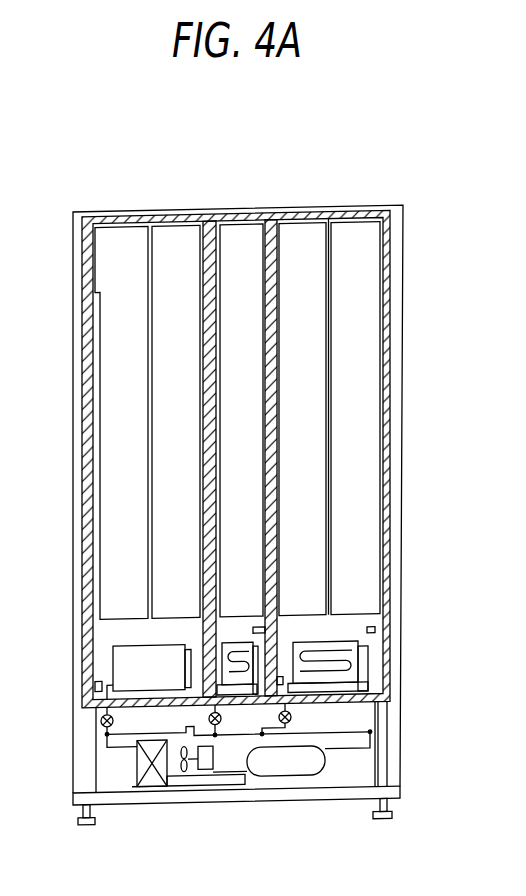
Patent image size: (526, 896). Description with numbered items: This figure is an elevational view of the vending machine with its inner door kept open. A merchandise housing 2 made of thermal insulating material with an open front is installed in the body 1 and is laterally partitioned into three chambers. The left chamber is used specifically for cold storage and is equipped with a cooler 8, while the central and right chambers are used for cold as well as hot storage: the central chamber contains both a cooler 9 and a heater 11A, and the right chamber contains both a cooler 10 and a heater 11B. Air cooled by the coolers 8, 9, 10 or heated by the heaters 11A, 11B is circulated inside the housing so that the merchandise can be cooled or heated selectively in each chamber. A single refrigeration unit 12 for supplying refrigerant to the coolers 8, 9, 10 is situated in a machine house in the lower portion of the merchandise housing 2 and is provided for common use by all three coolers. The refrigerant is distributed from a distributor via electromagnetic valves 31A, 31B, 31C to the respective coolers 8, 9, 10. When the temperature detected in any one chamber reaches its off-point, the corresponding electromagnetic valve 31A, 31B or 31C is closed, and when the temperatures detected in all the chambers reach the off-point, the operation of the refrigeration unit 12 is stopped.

The body 1 is at (343, 209).
The merchandise housing 2 is at (267, 214).
The cooler 8 is at (127, 660).
The cooler 9 is at (242, 656).
The cooler 10 is at (305, 648).
The heater 11A is at (230, 646).
The heater 11B is at (342, 652).
The refrigeration unit 12 is at (136, 763).
The electromagnetic valve 31A is at (101, 726).
The electromagnetic valve 31B is at (222, 720).
The electromagnetic valve 31C is at (291, 720).